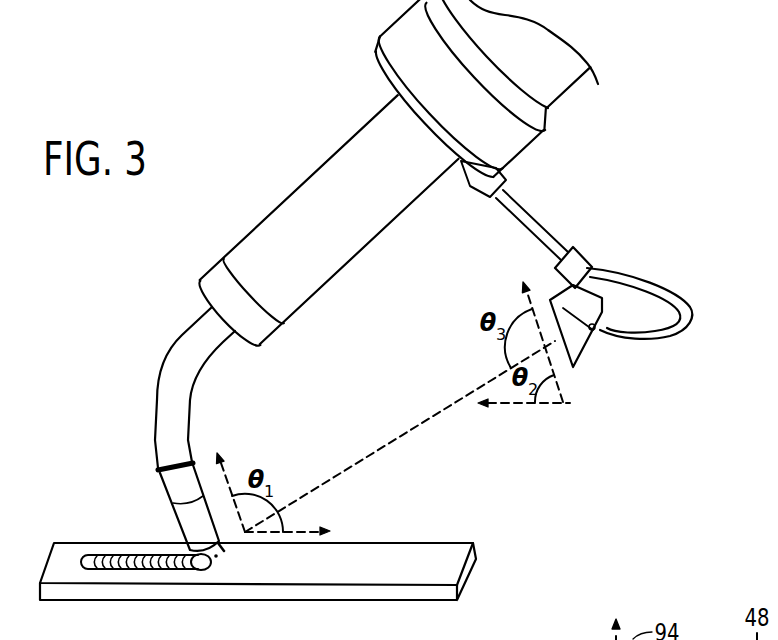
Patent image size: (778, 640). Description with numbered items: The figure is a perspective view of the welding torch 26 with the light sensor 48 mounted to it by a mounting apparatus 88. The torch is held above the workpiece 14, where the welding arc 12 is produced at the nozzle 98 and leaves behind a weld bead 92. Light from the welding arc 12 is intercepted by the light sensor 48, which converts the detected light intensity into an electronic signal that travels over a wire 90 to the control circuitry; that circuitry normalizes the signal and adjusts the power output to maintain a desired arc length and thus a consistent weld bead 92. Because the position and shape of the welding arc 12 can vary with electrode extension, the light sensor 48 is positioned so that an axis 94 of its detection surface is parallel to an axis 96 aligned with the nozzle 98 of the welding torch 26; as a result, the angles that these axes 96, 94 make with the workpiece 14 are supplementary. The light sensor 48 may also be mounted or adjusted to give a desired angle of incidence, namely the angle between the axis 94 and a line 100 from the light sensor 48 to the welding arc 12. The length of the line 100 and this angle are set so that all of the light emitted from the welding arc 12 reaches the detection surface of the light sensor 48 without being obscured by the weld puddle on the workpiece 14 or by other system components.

The welding torch 26 is at (300, 100).
The mounting apparatus 88 is at (543, 224).
The wire 90 is at (690, 308).
The light sensor 48 is at (567, 367).
The axis of the detection surface of the light sensor 94 is at (528, 305).
The line from the light sensor to the welding arc 100 is at (366, 455).
The axis aligned with the nozzle 96 is at (222, 478).
The nozzle 98 is at (152, 413).
The workpiece 14 is at (417, 557).
The weld bead 92 is at (108, 555).
The welding arc 12 is at (228, 561).